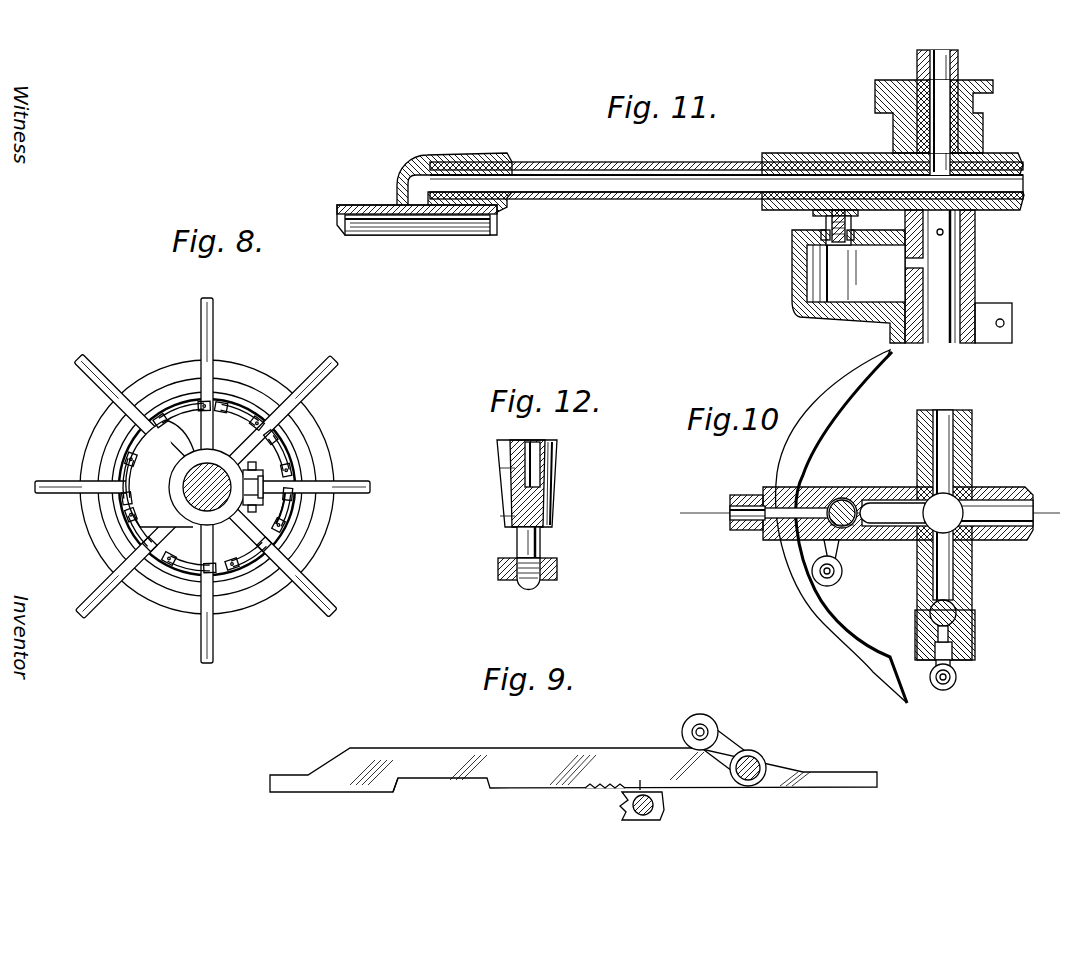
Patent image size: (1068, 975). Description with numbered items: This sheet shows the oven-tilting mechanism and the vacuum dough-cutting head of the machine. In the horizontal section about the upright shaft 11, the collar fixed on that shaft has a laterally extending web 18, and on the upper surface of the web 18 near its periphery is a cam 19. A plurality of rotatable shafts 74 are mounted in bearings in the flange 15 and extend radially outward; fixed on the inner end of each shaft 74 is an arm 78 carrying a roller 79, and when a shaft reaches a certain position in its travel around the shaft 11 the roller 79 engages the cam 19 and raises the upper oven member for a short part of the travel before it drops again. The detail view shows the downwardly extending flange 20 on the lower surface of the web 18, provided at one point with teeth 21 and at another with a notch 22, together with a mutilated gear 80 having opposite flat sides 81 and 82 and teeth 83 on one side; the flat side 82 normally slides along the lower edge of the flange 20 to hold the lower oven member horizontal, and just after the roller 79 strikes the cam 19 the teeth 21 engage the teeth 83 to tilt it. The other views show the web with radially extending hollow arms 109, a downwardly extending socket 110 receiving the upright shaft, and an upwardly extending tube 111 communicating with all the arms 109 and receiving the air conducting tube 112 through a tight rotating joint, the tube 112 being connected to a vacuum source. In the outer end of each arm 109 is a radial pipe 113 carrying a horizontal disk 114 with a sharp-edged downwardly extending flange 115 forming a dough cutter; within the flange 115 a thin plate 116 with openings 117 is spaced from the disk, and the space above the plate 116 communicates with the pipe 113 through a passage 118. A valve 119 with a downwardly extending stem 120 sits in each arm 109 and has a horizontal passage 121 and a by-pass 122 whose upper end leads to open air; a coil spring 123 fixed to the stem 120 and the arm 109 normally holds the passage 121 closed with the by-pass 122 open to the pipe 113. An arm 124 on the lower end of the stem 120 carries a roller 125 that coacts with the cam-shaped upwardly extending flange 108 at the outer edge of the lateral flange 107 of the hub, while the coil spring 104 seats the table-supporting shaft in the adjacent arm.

In FIG. 8, the flange 15 is at (249, 364).
In FIG. 8, the rotatable shaft 74 is at (98, 368).
In FIG. 9, the rotatable shaft 74 is at (755, 765).
In FIG. 8, the web 18 is at (185, 473).
In FIG. 8, the cam 19 is at (143, 444).
In FIG. 8, the arm 78 is at (296, 515).
In FIG. 9, the arm 78 is at (730, 745).
In FIG. 8, the roller 79 is at (290, 542).
In FIG. 9, the roller 79 is at (715, 726).
In FIG. 9, the flange 20 is at (573, 770).
In FIG. 9, the teeth 21 is at (606, 790).
In FIG. 9, the notch 22 is at (425, 790).
In FIG. 9, the mutilated gear 80 is at (665, 802).
In FIG. 9, the flat side 81 is at (662, 815).
In FIG. 9, the flat side 82 is at (650, 777).
In FIG. 9, the teeth 83 is at (622, 810).
In FIG. 10, the shaft 11 is at (858, 512).
In FIG. 10, the coil spring 104 is at (1000, 487).
In FIG. 11, the flange 107 is at (820, 318).
In FIG. 11, the flange 108 is at (800, 270).
In FIG. 10, the flange 108 is at (818, 612).
In FIG. 11, the hollow arm 109 is at (1008, 158).
In FIG. 11, the socket 110 is at (975, 233).
In FIG. 11, the tube 111 is at (985, 142).
In FIG. 11, the air conducting tube 112 is at (958, 65).
In FIG. 11, the pipe 113 is at (595, 163).
In FIG. 11, the disk 114 is at (352, 205).
In FIG. 11, the flange 115 is at (507, 212).
In FIG. 11, the plate 116 is at (413, 222).
In FIG. 11, the openings 117 is at (392, 222).
In FIG. 11, the passage 118 is at (420, 183).
In FIG. 11, the valve 119 is at (831, 205).
In FIG. 10, the valve 119 is at (848, 500).
In FIG. 11, the stem 120 is at (828, 221).
In FIG. 12, the stem 120 is at (517, 543).
In FIG. 11, the horizontal passage 121 is at (845, 205).
In FIG. 12, the by-pass 122 is at (533, 442).
In FIG. 10, the by-pass 122 is at (852, 535).
In FIG. 11, the coil spring 123 is at (852, 226).
In FIG. 10, the arm 124 is at (836, 557).
In FIG. 10, the roller 125 is at (833, 582).